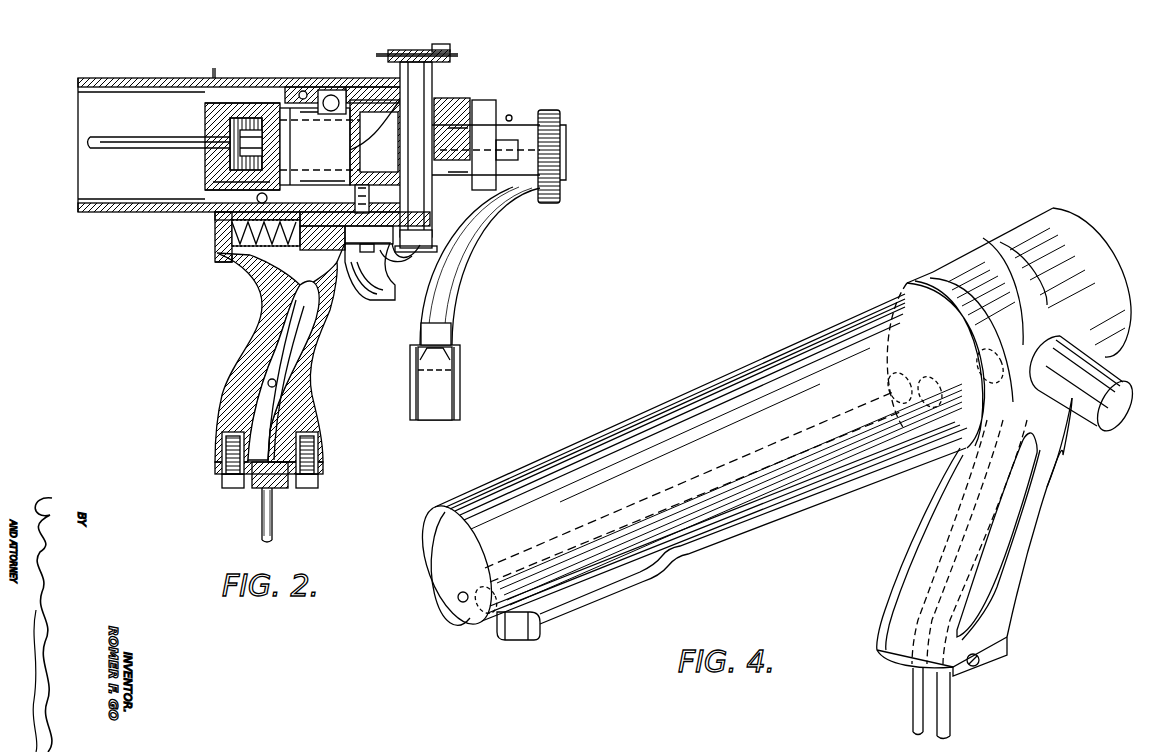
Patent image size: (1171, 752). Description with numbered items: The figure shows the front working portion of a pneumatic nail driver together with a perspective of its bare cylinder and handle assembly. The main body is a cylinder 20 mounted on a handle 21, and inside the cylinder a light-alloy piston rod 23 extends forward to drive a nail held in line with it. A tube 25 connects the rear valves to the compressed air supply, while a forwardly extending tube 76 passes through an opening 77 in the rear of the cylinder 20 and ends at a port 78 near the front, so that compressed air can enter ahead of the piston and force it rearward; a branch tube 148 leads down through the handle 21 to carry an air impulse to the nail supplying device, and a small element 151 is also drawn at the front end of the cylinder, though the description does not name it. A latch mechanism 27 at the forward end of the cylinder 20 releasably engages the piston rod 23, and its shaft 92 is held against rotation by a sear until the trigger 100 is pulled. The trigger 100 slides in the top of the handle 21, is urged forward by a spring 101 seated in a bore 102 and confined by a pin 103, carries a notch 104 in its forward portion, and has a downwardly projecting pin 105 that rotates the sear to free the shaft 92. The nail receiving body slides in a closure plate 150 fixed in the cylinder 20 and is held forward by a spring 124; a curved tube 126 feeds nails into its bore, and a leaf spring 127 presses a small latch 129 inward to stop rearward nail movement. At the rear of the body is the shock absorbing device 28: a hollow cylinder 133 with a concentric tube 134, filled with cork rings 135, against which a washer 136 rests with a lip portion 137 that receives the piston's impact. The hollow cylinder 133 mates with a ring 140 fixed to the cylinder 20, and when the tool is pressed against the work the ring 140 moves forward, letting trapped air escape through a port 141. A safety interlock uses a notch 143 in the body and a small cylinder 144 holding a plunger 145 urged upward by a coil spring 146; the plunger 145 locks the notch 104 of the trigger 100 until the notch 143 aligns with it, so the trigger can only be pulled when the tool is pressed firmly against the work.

In FIG. 2, the cylinder 20 is at (165, 68).
In FIG. 4, the cylinder 20 is at (762, 368).
In FIG. 2, the handle 21 is at (238, 364).
In FIG. 4, the handle 21 is at (1032, 528).
In FIG. 2, the piston rod 23 is at (132, 148).
In FIG. 2, the tube 25 is at (272, 494).
In FIG. 4, the tube 25 is at (646, 568).
In FIG. 2, the latch mechanism 27 is at (409, 304).
In FIG. 2, the shock absorbing device 28 is at (174, 182).
In FIG. 4, the tube 76 is at (782, 448).
In FIG. 2, the opening 77 is at (486, 150).
In FIG. 2, the port 78 is at (257, 198).
In FIG. 4, the port 78 is at (945, 371).
In FIG. 2, the shaft 92 is at (432, 240).
In FIG. 2, the trigger 100 is at (362, 292).
In FIG. 2, the spring 101 is at (331, 234).
In FIG. 2, the bore 102 is at (222, 256).
In FIG. 2, the pin 103 is at (214, 230).
In FIG. 2, the notch 104 is at (355, 244).
In FIG. 2, the pin 105 is at (355, 226).
In FIG. 2, the spring 124 is at (470, 110).
In FIG. 2, the tube 126 is at (472, 262).
In FIG. 2, the leaf spring 127 is at (510, 114).
In FIG. 2, the latch 129 is at (567, 130).
In FIG. 2, the hollow cylinder 133 is at (242, 104).
In FIG. 2, the concentric tube 134 is at (218, 128).
In FIG. 2, the cork rings 135 is at (214, 190).
In FIG. 2, the washer 136 is at (222, 99).
In FIG. 2, the lip portion 137 is at (218, 168).
In FIG. 2, the ring 140 is at (304, 90).
In FIG. 2, the port 141 is at (334, 96).
In FIG. 2, the notch 143 is at (377, 142).
In FIG. 2, the small cylinder 144 is at (422, 250).
In FIG. 2, the plunger 145 is at (345, 146).
In FIG. 2, the coil spring 146 is at (356, 191).
In FIG. 2, the branch tube 148 is at (273, 520).
In FIG. 4, the branch tube 148 is at (978, 360).
In FIG. 2, the closure plate 150 is at (440, 104).
In FIG. 4, the nozzle 151 is at (458, 602).